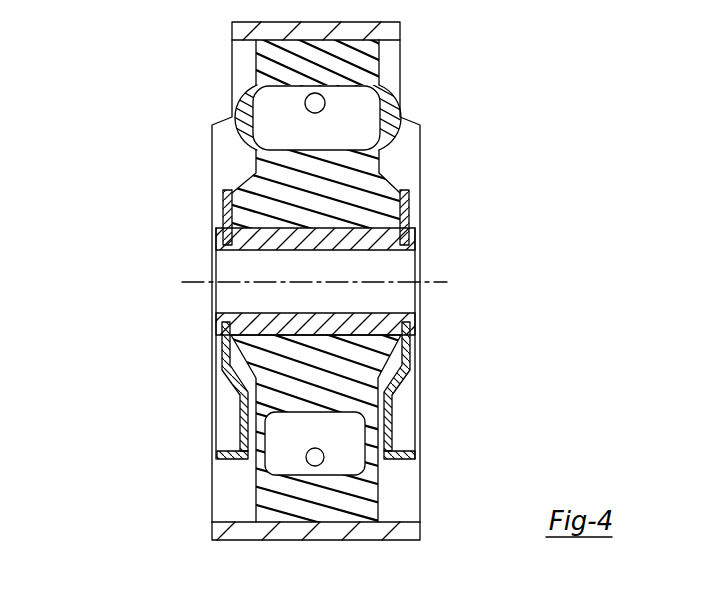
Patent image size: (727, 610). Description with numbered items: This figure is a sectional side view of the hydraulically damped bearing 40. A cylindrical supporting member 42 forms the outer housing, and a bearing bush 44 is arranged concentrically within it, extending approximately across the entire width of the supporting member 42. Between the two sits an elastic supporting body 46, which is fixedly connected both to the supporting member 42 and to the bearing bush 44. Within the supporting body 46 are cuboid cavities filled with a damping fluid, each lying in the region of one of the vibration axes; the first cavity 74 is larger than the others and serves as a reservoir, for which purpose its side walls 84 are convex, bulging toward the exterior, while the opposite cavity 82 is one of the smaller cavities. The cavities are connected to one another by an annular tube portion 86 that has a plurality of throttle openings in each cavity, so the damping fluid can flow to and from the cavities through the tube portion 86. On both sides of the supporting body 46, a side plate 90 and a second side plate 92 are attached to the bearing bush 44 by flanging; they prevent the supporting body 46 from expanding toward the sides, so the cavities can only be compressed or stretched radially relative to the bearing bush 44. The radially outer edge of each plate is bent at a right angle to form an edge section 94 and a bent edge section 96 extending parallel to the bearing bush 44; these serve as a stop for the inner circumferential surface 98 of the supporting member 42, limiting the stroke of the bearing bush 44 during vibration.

The hydraulically damped bearing 40 is at (147, 80).
The cylindrical supporting member 42 is at (393, 32).
The bearing bush 44 is at (378, 242).
The elastic supporting body 46 is at (367, 163).
The first cavity 74 is at (267, 117).
The cavity 82 is at (288, 460).
The side walls 84 is at (385, 103).
The annular tube portion 86 is at (317, 458).
The side plate 90 is at (228, 365).
The second side plate 92 is at (398, 365).
The edge section 94 is at (230, 456).
The bent edge section 96 is at (398, 455).
The inner circumferential surface 98 is at (231, 518).